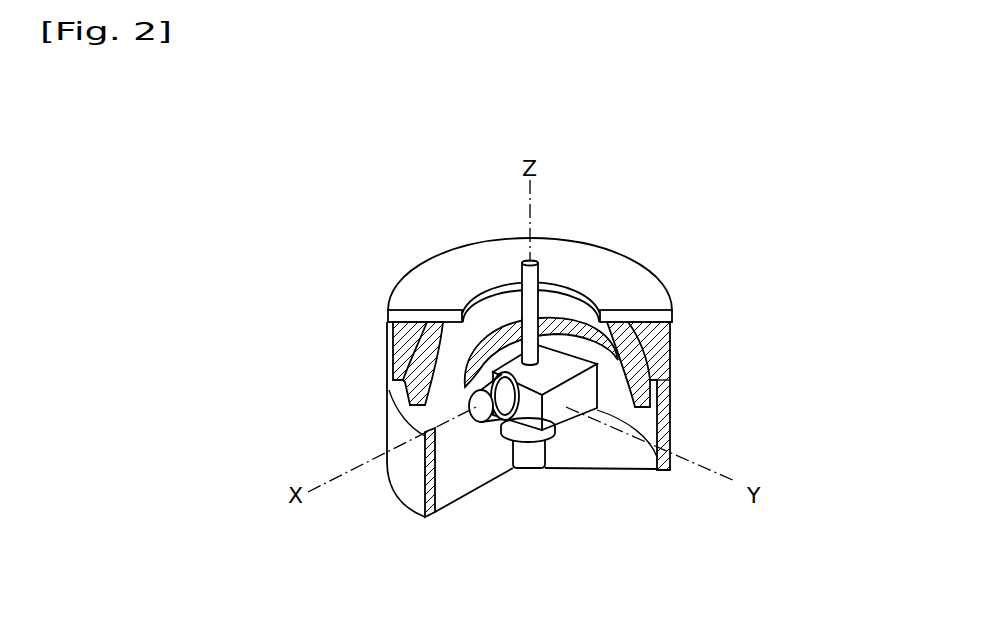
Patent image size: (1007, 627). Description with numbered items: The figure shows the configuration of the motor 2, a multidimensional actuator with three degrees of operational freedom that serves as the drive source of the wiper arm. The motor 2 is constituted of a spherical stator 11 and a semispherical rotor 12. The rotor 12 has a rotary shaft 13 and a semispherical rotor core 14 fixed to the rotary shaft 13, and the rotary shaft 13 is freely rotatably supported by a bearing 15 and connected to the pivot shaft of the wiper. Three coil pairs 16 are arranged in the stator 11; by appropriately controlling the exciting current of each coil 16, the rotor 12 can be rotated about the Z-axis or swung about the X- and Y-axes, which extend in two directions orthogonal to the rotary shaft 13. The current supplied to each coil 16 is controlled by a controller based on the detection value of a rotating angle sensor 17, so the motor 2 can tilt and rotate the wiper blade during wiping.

The motor 2 is at (695, 292).
The spherical stator 11 is at (661, 348).
The semispherical rotor 12 is at (568, 308).
The rotary shaft 13 is at (535, 277).
The semispherical rotor core 14 is at (490, 312).
The bearing 15 is at (568, 403).
The coil pairs 16 is at (414, 392).
The rotating angle sensor 17 is at (480, 410).